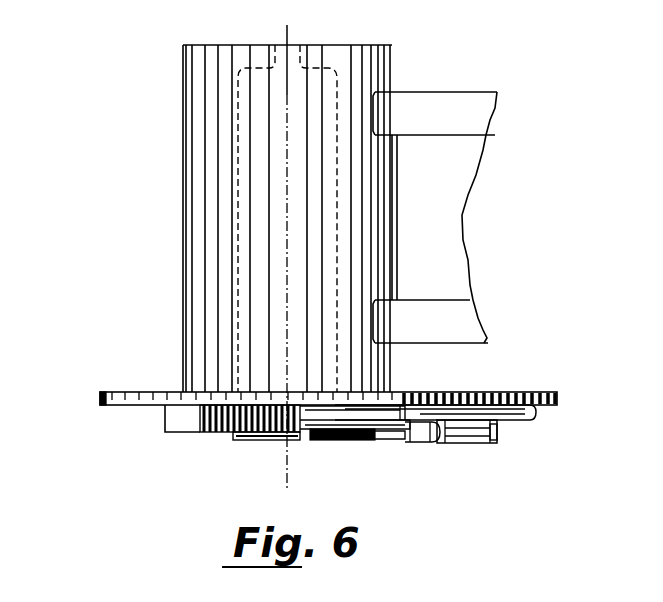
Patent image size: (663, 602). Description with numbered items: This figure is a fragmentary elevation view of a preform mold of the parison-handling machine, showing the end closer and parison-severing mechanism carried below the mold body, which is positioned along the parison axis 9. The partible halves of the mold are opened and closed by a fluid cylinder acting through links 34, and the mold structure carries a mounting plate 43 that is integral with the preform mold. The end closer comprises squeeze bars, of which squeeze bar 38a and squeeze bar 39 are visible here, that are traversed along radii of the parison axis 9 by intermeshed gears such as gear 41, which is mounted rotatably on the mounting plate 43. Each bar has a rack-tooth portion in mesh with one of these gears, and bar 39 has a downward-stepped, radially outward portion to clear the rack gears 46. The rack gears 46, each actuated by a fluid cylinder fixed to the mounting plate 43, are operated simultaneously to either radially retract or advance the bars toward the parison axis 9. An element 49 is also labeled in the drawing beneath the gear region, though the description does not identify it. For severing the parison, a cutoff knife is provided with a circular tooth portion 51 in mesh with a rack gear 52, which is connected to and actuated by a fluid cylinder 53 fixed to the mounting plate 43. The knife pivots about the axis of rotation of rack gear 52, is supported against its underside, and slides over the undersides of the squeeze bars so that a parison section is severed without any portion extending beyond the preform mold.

The parison axis 9 is at (288, 26).
The links 34 is at (497, 108).
The mounting plate 43 is at (102, 407).
The rack gear 46 is at (388, 401).
The squeeze bar 38a is at (163, 422).
The gear 41 is at (227, 433).
The hub 49 is at (266, 444).
The circular tooth portion 51 is at (292, 445).
The rack gear 52 is at (364, 442).
The squeeze bar 39 is at (423, 443).
The fluid cylinder 53 is at (500, 437).